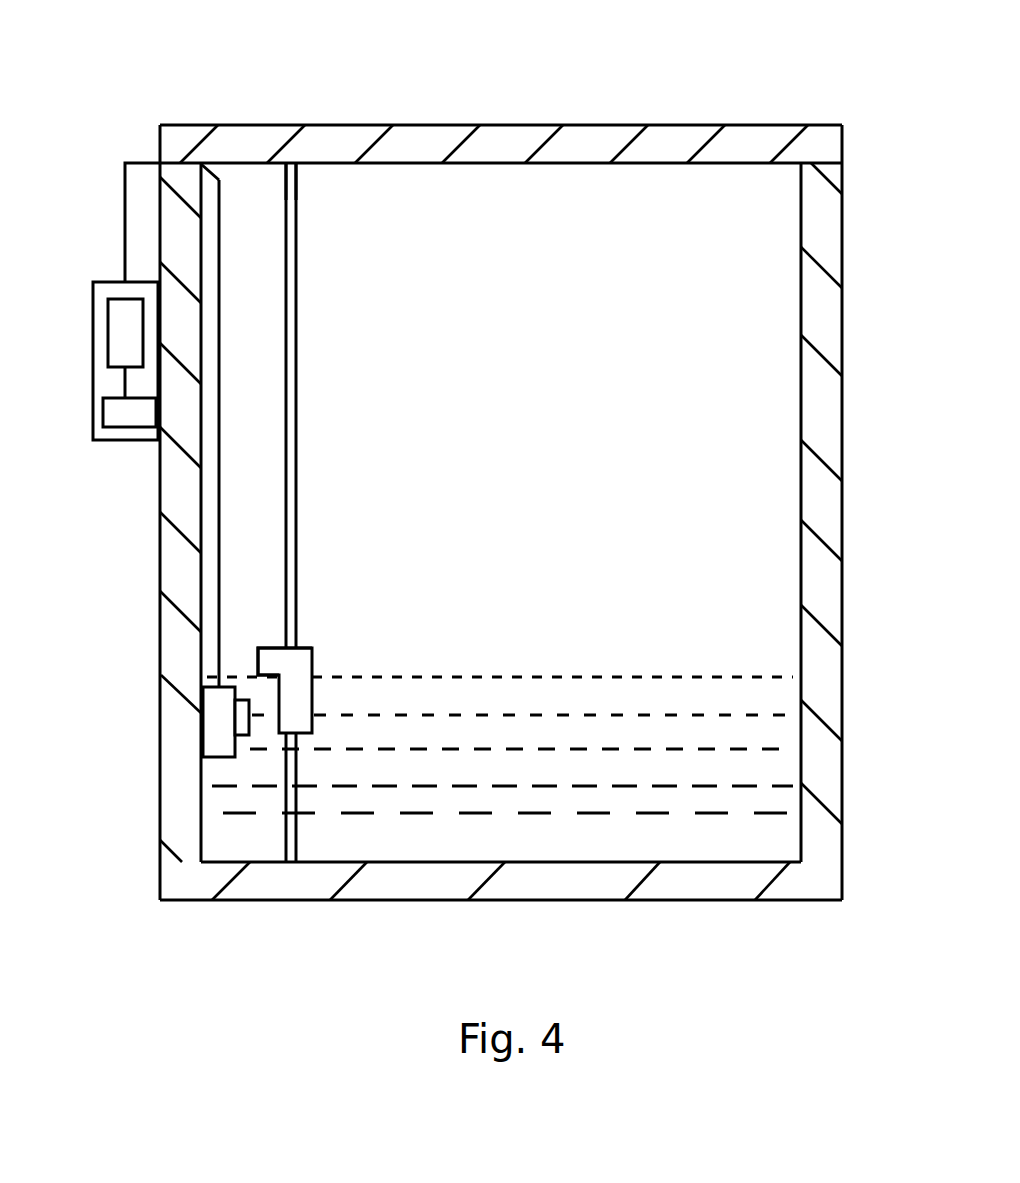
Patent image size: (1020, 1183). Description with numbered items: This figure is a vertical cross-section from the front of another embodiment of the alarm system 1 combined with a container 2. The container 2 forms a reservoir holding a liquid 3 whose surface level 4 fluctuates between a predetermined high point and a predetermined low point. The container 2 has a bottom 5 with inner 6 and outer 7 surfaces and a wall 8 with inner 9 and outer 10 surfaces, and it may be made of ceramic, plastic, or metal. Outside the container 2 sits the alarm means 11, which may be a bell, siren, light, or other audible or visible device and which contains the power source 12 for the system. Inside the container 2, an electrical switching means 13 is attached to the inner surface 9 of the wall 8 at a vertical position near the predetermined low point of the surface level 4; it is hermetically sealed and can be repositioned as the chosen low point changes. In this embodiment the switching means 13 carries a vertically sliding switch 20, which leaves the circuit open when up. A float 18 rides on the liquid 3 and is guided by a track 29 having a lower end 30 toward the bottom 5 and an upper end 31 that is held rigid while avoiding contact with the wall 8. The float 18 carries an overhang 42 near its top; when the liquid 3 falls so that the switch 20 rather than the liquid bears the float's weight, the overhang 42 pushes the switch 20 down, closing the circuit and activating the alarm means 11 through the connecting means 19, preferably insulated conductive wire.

The alarm system 1 is at (491, 493).
The container 2 is at (544, 547).
The liquid 3 is at (773, 770).
The surface level 4 is at (715, 677).
The bottom 5 is at (428, 889).
The inner surface of bottom 6 is at (553, 863).
The outer surface of bottom 7 is at (672, 900).
The wall 8 is at (828, 520).
The inner surface of wall 9 is at (802, 336).
The outer surface of wall 10 is at (843, 221).
The alarm means 11 is at (131, 462).
The power source 12 is at (112, 413).
The electrical switching means 13 is at (215, 745).
The float 18 is at (302, 692).
The connecting means 19 is at (123, 222).
The vertically sliding switch 20 is at (242, 719).
The track 29 is at (290, 343).
The lower end 30 is at (285, 863).
The upper end 31 is at (297, 168).
The overhang 42 is at (258, 662).